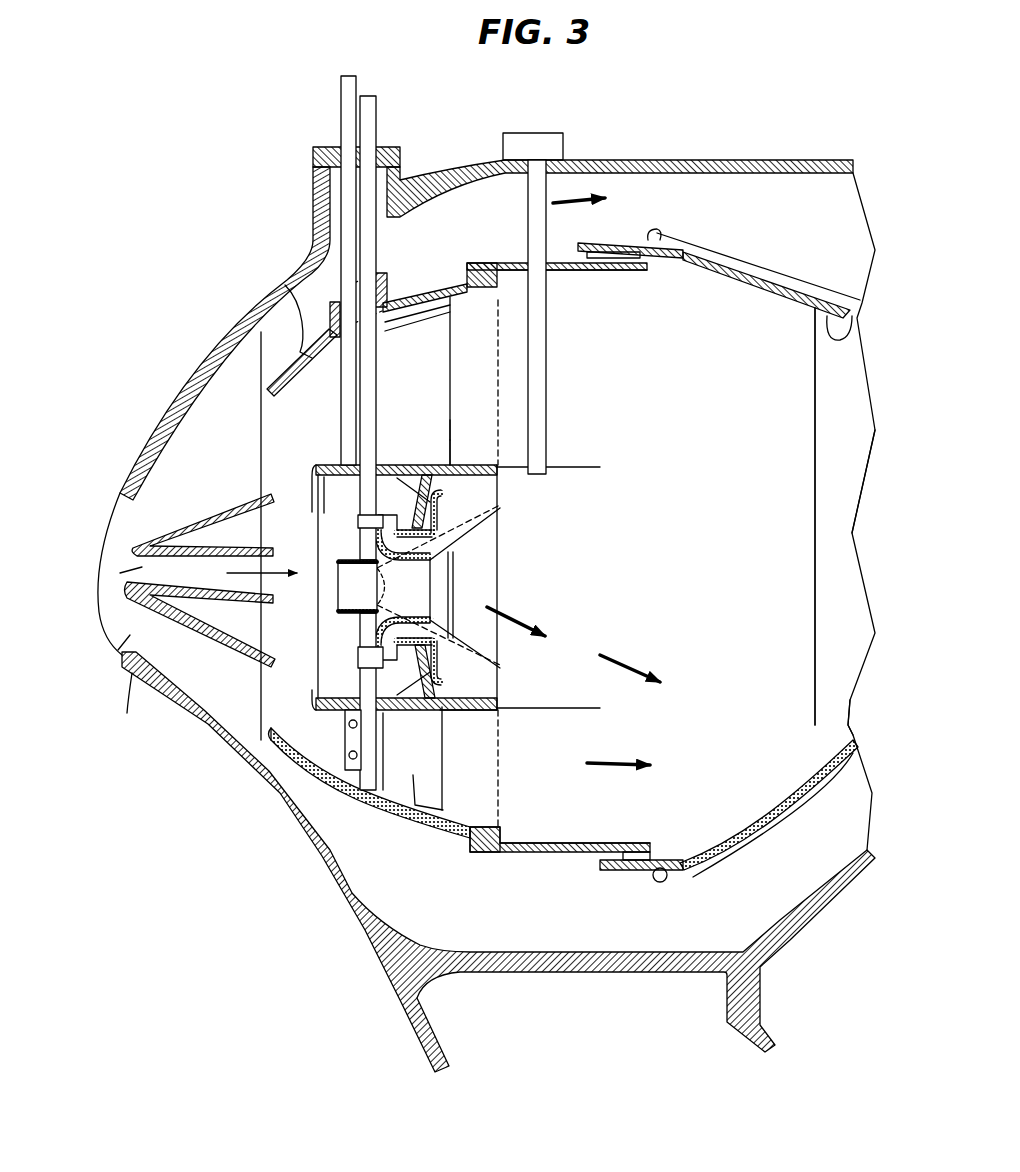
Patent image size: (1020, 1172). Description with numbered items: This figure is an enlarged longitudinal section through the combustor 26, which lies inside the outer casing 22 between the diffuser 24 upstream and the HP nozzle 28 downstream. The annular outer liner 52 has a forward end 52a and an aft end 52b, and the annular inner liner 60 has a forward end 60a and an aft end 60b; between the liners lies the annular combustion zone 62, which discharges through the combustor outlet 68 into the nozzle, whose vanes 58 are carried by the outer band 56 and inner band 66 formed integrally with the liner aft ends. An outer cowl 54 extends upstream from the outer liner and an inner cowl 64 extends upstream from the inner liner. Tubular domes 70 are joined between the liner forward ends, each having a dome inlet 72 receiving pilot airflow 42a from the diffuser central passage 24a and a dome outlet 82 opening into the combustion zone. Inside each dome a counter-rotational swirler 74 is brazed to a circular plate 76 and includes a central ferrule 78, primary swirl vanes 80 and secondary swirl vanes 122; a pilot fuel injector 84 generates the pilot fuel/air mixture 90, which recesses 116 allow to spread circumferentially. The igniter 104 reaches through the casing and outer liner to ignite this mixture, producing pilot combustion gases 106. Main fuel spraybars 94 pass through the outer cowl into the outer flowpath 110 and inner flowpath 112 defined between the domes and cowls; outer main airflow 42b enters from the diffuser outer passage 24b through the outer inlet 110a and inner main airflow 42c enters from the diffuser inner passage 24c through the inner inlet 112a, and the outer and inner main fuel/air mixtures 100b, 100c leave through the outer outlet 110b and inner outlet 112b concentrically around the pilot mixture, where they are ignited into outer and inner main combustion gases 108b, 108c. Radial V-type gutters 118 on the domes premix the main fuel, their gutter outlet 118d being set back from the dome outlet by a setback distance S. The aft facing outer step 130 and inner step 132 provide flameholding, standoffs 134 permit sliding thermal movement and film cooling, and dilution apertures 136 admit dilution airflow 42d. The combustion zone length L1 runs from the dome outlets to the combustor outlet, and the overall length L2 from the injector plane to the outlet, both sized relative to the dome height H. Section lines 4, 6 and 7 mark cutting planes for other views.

The outer casing 22 is at (730, 160).
The diffuser 24 is at (157, 407).
The annular central passage 24a is at (110, 640).
The diffuser outer passage 24b is at (130, 497).
The diffuser inner passage 24c is at (127, 713).
The combustor 26 is at (409, 900).
The HP nozzle 28 is at (862, 351).
The pilot airflow 42a is at (243, 577).
The outer main airflow 42b is at (270, 450).
The inner main airflow 42c is at (272, 703).
The dilution airflow 42d is at (680, 253).
The annular outer liner 52 is at (598, 272).
The outer liner forward end 52a is at (463, 280).
The outer liner aft end 52b is at (767, 265).
The annular outer cowl 54 is at (285, 290).
The outer band 56 is at (850, 305).
The nozzle vanes 58 is at (845, 488).
The annular inner liner 60 is at (537, 858).
The inner liner forward end 60a is at (470, 853).
The inner liner aft end 60b is at (825, 793).
The annular combustion zone 62 is at (760, 607).
The annular inner cowl 64 is at (300, 758).
The inner band 66 is at (850, 733).
The combustor outlet 68 is at (815, 650).
The tubular domes 70 is at (460, 710).
The annular dome inlet 72 is at (313, 512).
The swirler 74 is at (480, 550).
The circular plate 76 is at (392, 467).
The central tubular ferrule 78 is at (340, 620).
The primary swirl vanes 80 is at (320, 693).
The annular dome outlet 82 is at (500, 703).
The pilot fuel injectors 84 is at (368, 118).
The pilot fuel/air mixture 90 is at (487, 557).
The main fuel spraybars 94 is at (338, 100).
The outer main fuel/air mixture 100b is at (475, 393).
The inner main fuel/air mixture 100c is at (310, 792).
The igniter 104 is at (537, 383).
The pilot combustion gases 106 is at (595, 510).
The outer main combustion gases 108b is at (745, 435).
The inner main combustion gases 108c is at (618, 768).
The annular outer flowpath 110 is at (490, 346).
The annular outer inlet 110a is at (280, 387).
The annular outer outlet 110b is at (497, 313).
The annular inner flowpath 112 is at (488, 807).
The annular inner inlet 112a is at (267, 715).
The annular inner outlet 112b is at (397, 768).
The recesses 116 is at (470, 633).
The radial V-type gutter 118 is at (388, 337).
The second gutter outlet 118d is at (456, 430).
The secondary swirl vanes 122 is at (340, 708).
The outer step 130 is at (505, 265).
The inner step 132 is at (500, 833).
The standoffs 134 is at (613, 253).
The dilution apertures 136 is at (668, 243).
The dome height H is at (585, 703).
The setback distance S is at (405, 447).
The combustion zone length L1 is at (502, 745).
The overall combustor length L2 is at (387, 727).
The section line 4 is at (340, 588).
The section line 6 is at (262, 170).
The section line 7 is at (510, 230).